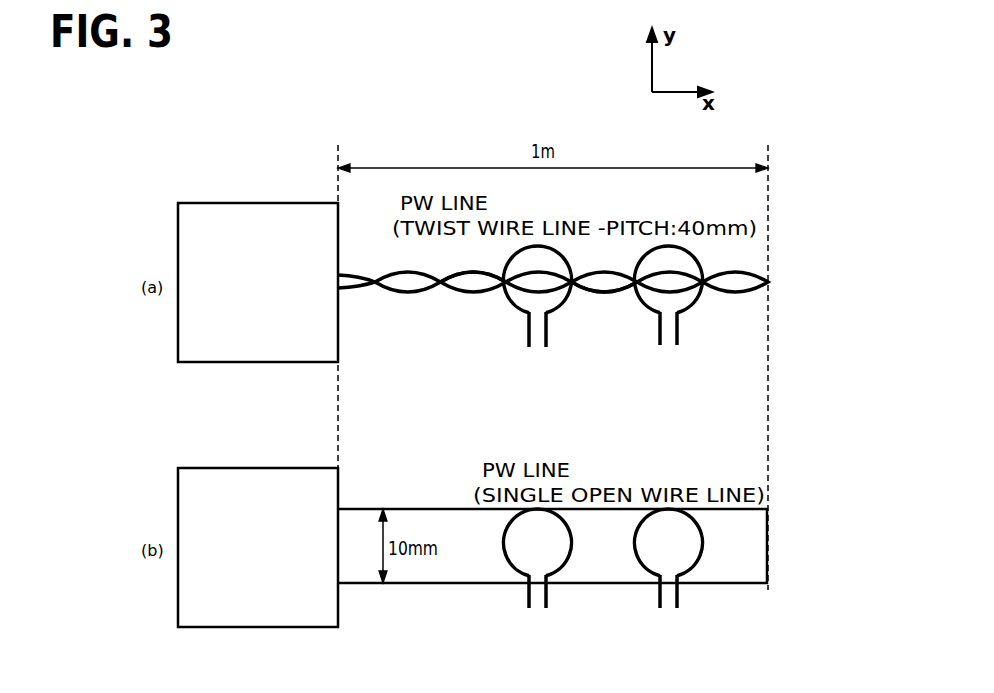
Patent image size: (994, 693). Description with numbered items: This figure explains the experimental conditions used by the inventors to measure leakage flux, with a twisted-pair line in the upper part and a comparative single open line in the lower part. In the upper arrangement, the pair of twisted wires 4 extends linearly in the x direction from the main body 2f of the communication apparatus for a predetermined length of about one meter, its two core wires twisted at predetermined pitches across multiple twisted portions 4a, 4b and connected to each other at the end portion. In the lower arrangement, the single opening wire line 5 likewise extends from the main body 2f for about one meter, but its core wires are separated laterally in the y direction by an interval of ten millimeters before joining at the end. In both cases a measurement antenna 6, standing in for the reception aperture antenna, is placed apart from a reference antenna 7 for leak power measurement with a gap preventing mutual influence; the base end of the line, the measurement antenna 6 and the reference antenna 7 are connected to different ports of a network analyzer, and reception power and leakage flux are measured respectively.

The main body 2f is at (263, 203).
The pair of twisted wires 4 is at (355, 259).
The twisted portion 4a is at (505, 289).
The twisted portion 4b is at (568, 289).
The single opening wire line 5 is at (428, 509).
The measurement antenna 6 is at (547, 331).
The reference antenna 7 is at (678, 327).